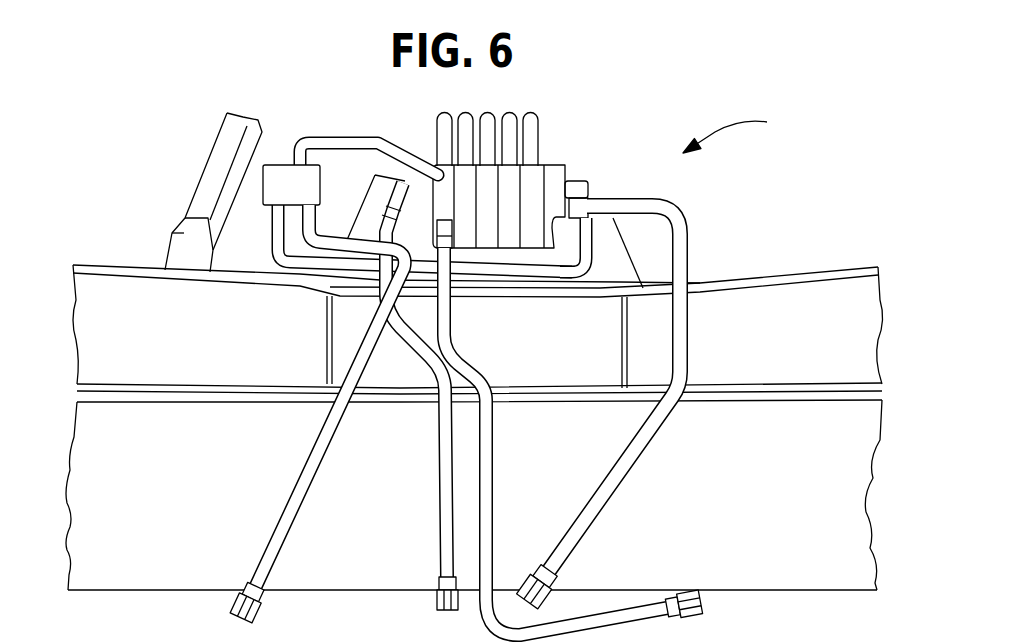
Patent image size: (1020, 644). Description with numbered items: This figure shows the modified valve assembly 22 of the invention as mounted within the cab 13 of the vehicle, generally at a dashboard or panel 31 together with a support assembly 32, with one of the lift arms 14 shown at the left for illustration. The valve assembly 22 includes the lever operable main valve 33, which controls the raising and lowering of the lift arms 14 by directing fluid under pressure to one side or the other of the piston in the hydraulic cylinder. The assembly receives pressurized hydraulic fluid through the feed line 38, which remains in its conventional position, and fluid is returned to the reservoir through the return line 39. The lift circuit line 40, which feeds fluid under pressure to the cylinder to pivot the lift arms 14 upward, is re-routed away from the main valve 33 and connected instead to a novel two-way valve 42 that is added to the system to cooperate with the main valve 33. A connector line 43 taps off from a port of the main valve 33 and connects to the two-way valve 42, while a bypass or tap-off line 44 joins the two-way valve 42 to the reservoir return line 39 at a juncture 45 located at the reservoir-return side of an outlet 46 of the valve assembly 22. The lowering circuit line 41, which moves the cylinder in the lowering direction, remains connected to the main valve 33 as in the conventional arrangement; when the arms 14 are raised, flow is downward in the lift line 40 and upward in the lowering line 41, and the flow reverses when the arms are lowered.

The cab 13 is at (753, 592).
The lift arm 14 is at (205, 172).
The valve assembly 22 is at (747, 130).
The dashboard or panel 31 is at (740, 295).
The support assembly 32 is at (600, 185).
The main valve 33 is at (434, 164).
The pressurized feed line 38 is at (441, 528).
The reservoir return line 39 is at (617, 487).
The lift circuit line 40 is at (272, 546).
The lowering circuit line 41 is at (490, 496).
The two-way valve 42 is at (276, 165).
The connector line 43 is at (372, 137).
The bypass or tap-off line 44 is at (290, 290).
The juncture 45 is at (598, 220).
The outlet 46 is at (594, 180).